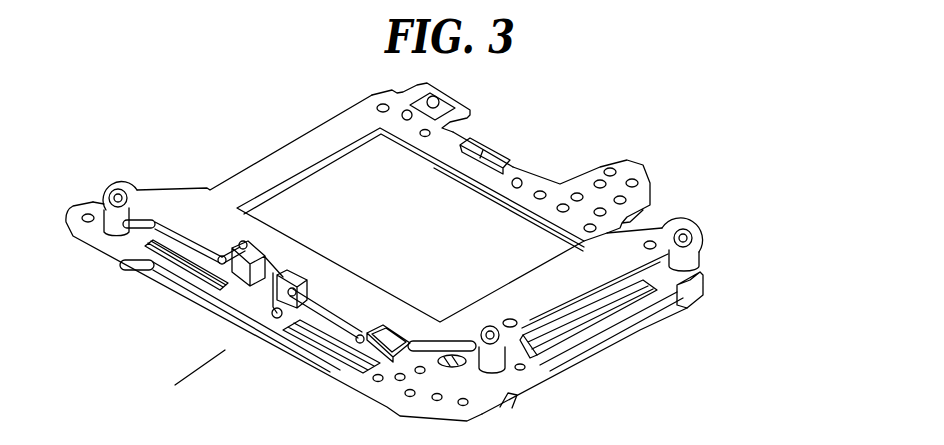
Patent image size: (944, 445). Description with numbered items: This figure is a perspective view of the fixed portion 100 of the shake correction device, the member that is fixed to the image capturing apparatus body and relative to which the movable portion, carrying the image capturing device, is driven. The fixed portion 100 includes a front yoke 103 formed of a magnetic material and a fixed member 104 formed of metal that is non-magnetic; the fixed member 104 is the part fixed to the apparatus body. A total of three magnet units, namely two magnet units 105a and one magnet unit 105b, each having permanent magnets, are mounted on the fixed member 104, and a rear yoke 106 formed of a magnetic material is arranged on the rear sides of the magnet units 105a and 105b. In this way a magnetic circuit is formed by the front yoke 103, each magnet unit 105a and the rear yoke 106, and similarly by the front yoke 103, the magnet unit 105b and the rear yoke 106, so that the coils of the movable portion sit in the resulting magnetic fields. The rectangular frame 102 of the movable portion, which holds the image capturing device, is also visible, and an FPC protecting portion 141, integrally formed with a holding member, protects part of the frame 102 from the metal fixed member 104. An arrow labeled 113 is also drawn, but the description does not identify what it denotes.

The fixed portion 100 is at (244, 120).
The frame 102 is at (345, 143).
The front yoke 103 is at (580, 281).
The fixed member 104 is at (493, 380).
The magnet unit 105a is at (175, 267).
The magnet unit 105b is at (627, 320).
The rear yoke 106 is at (185, 292).
The direction arrow 113 is at (220, 359).
The FPC protecting portion 141 is at (517, 183).